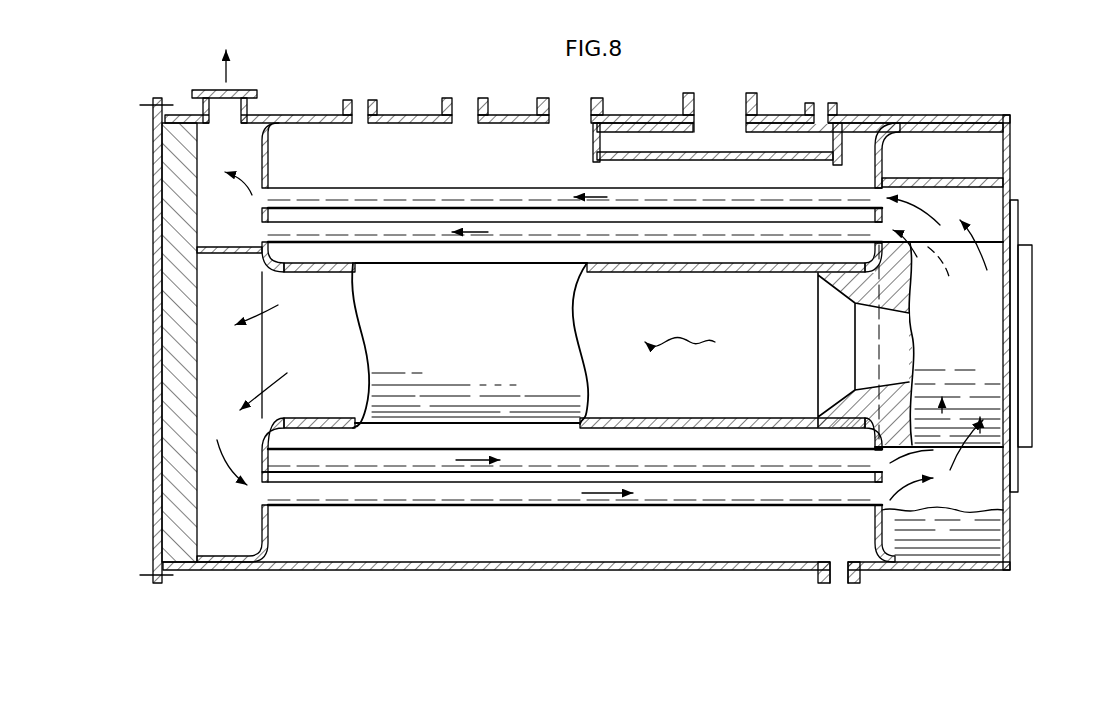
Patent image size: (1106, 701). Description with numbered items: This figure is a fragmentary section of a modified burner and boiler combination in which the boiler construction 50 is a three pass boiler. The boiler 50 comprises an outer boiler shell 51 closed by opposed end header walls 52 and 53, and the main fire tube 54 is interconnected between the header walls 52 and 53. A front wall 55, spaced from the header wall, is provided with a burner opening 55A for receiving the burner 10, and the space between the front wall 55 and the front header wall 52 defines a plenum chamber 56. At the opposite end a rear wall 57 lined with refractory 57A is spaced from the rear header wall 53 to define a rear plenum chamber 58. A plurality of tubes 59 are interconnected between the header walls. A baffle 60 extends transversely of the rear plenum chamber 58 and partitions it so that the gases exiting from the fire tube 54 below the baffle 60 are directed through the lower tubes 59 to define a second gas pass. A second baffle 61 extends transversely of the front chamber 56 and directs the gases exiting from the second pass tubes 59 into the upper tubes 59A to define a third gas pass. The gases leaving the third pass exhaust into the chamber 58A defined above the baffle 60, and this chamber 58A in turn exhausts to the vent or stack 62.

The burner 10 is at (990, 370).
The boiler construction 50 is at (706, 74).
The outer boiler shell 51 is at (415, 113).
The front header wall 52 is at (882, 158).
The rear header wall 53 is at (270, 170).
The main fire tube 54 is at (492, 332).
The front wall 55 is at (1012, 192).
The burner opening 55A is at (1005, 247).
The plenum chamber 56 is at (980, 487).
The rear wall 57 is at (152, 443).
The refractory 57A is at (178, 343).
The rear plenum chamber 58 is at (232, 530).
The chamber 58A is at (213, 153).
The tubes 59 is at (450, 490).
The upper tubes 59A is at (533, 198).
The baffle 60 is at (232, 256).
The baffle 61 is at (972, 180).
The vent or stack 62 is at (246, 120).